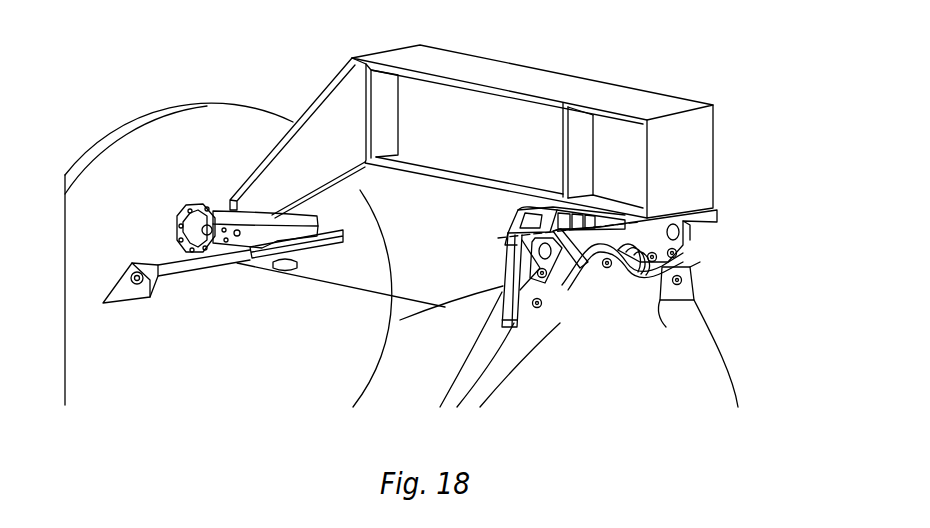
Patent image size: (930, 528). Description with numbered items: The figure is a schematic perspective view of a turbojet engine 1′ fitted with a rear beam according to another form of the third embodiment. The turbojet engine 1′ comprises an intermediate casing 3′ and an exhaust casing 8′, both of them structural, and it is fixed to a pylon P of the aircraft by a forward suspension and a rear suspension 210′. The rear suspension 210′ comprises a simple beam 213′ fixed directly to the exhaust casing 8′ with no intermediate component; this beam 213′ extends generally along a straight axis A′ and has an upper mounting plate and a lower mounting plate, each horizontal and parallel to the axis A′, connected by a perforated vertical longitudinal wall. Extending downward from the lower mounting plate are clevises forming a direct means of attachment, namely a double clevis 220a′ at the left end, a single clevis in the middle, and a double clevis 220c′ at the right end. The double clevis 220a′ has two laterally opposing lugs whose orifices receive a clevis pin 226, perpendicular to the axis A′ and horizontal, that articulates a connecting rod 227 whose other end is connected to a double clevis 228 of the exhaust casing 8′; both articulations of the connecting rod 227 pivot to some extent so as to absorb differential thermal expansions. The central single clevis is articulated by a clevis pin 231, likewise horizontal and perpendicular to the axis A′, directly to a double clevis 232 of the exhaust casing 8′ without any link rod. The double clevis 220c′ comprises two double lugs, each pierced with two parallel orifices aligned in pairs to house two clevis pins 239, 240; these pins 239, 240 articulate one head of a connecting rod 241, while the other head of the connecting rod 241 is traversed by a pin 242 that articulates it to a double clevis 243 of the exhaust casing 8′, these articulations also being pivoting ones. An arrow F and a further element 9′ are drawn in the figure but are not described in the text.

The turbojet engine 1′ is at (113, 108).
The intermediate casing 3′ is at (207, 128).
The pylon P is at (545, 85).
The steering arm assembly 9′ is at (233, 279).
The exhaust casing 8′ is at (477, 388).
The direction of travel F is at (677, 377).
The beam 213′ is at (500, 234).
The double clevis of the exhaust casing 232 is at (565, 250).
The axis A′ is at (488, 248).
The double clevis 220a′ is at (498, 262).
The connecting rod 227 is at (508, 285).
The double clevis of the exhaust casing 228 is at (496, 304).
The clevis pin 226 is at (553, 293).
The clevis pin 231 is at (608, 268).
The rear suspension 210′ is at (719, 236).
The double clevis 220c′ is at (689, 238).
The clevis pin 240 is at (680, 252).
The connecting rod 241 is at (675, 260).
The clevis pin 239 is at (668, 280).
The pin 242 is at (682, 283).
The double clevis of the exhaust casing 243 is at (698, 277).